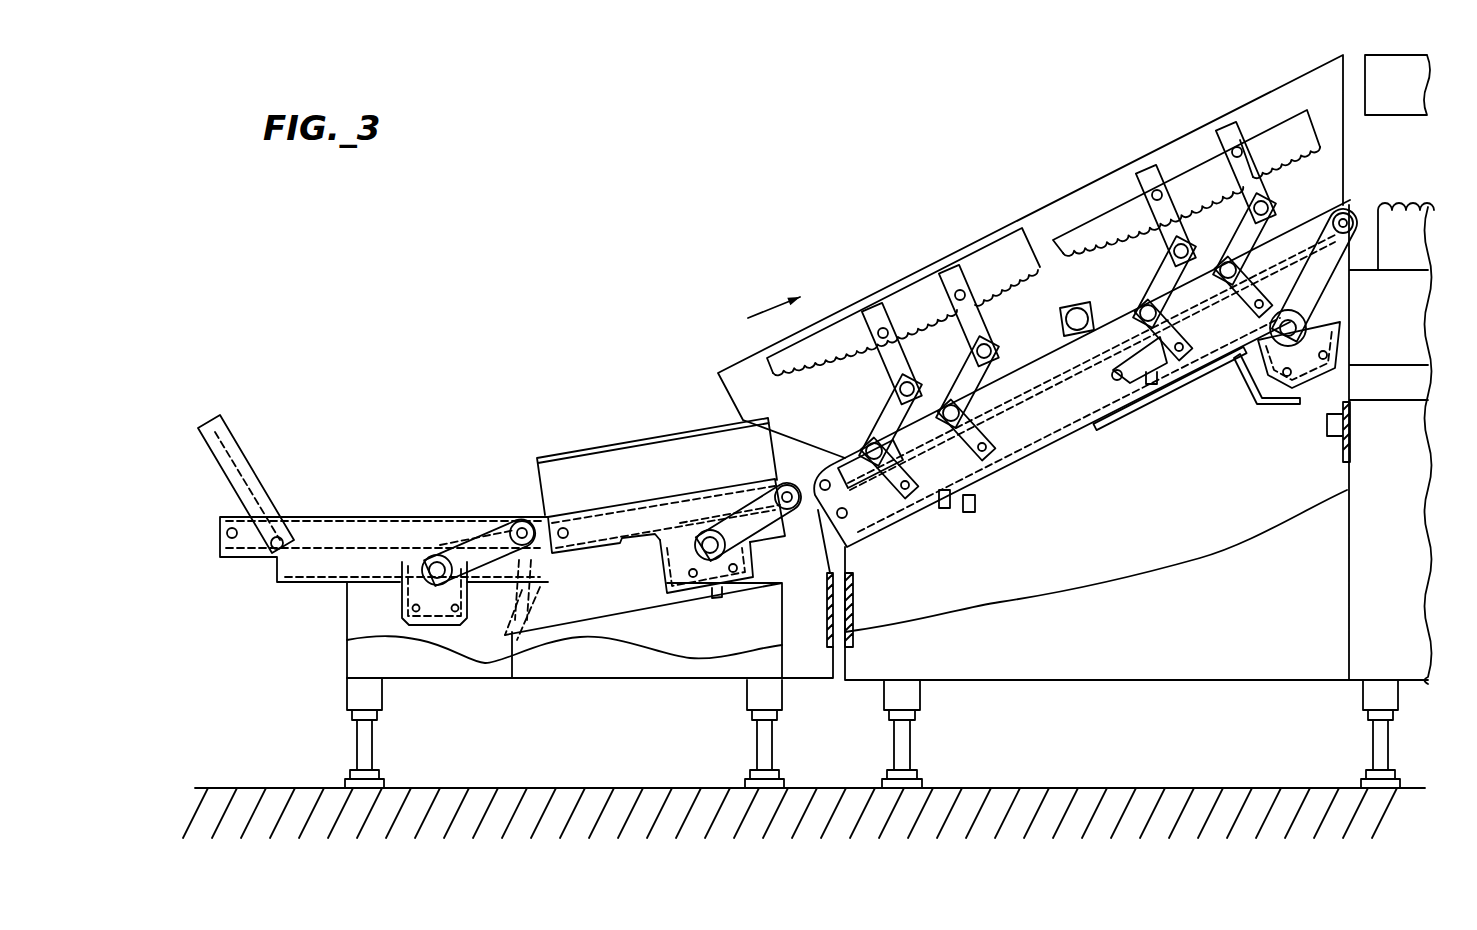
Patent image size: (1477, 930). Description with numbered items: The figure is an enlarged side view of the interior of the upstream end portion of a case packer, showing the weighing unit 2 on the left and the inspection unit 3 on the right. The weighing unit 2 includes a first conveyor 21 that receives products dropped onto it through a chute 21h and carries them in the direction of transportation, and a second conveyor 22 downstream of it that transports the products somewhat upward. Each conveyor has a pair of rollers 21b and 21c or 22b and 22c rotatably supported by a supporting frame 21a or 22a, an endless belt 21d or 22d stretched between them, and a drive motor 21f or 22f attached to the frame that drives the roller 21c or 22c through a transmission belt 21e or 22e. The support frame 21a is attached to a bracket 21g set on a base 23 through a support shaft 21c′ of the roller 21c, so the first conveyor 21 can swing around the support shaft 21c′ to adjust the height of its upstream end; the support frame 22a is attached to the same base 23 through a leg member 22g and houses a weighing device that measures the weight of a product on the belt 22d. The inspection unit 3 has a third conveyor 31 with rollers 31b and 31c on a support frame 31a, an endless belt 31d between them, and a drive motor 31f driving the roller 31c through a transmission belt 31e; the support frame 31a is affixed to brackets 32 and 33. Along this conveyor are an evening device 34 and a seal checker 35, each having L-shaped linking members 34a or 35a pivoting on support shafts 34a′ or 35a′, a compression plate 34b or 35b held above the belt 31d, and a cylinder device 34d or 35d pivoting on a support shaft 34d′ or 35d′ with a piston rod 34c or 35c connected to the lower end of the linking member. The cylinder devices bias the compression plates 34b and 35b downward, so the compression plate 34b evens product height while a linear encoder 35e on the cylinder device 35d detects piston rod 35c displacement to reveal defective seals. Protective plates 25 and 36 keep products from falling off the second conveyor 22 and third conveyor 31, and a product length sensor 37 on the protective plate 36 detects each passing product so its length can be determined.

The weighing unit 2 is at (478, 395).
The inspection unit 3 is at (975, 152).
The first conveyor 21 is at (403, 468).
The supporting frame 21a is at (300, 568).
The roller 21b is at (217, 533).
The roller 21c is at (540, 592).
The support shaft 21c′ is at (508, 522).
The endless belt 21d is at (380, 515).
The transmission belt 21e is at (477, 535).
The drive motor 21f is at (400, 583).
The bracket 21g is at (522, 597).
The chute 21h is at (232, 445).
The second conveyor 22 is at (660, 432).
The support frame 22a is at (640, 547).
The roller 22b is at (528, 528).
The roller 22c is at (750, 482).
The endless belt 22d is at (630, 502).
The transmission belt 22e is at (733, 512).
The drive motor 22f is at (663, 578).
The leg member 22g is at (713, 597).
The base 23 is at (747, 645).
The protective plate 25 is at (590, 455).
The third conveyor 31 is at (1082, 479).
The support frame 31a is at (995, 478).
The roller 31b is at (832, 500).
The roller 31c is at (1358, 213).
The endless belt 31d is at (1043, 403).
The transmission belt 31e is at (1333, 280).
The drive motor 31f is at (1345, 335).
The bracket 32 is at (990, 510).
The bracket 33 is at (1285, 410).
The evening device 34 is at (880, 293).
The L-shaped linking member 34a is at (895, 405).
The support shaft 34a′ is at (867, 442).
The compression plate 34b is at (962, 252).
The piston rod 34c is at (940, 503).
The cylinder device 34d is at (860, 503).
The support shaft 34d′ is at (843, 517).
The seal checker 35 is at (1203, 155).
The L-shaped linking member 35a is at (1157, 283).
The support shaft 35a′ is at (1147, 303).
The compression plate 35b is at (1280, 123).
The piston rod 35c is at (1197, 380).
The cylinder device 35d is at (1135, 383).
The support shaft 35d′ is at (1120, 380).
The linear encoder 35e is at (1152, 385).
The protective plate 36 is at (1103, 197).
The product length sensor 37 is at (1065, 322).